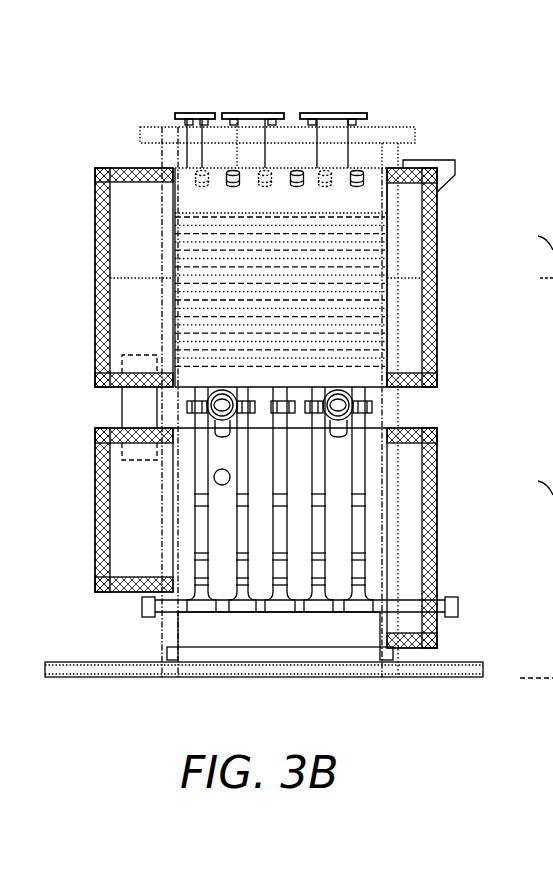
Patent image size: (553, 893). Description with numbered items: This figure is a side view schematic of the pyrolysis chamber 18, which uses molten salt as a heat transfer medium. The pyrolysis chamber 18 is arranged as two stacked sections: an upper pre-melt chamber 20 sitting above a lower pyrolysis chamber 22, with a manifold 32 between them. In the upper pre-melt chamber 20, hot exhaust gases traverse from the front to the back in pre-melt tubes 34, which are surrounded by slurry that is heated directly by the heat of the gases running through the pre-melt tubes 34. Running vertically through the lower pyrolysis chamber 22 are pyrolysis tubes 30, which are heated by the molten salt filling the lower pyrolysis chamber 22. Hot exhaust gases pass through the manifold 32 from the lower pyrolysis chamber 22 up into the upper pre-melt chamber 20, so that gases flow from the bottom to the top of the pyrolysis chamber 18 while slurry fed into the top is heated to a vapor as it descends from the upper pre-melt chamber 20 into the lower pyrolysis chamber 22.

The pyrolysis chamber 18 is at (220, 70).
The upper pre-melt chamber 20 is at (440, 262).
The lower pyrolysis chamber 22 is at (440, 505).
The pyrolysis tubes 30 is at (317, 528).
The manifold 32 is at (130, 413).
The pre-melt tubes 34 is at (293, 257).